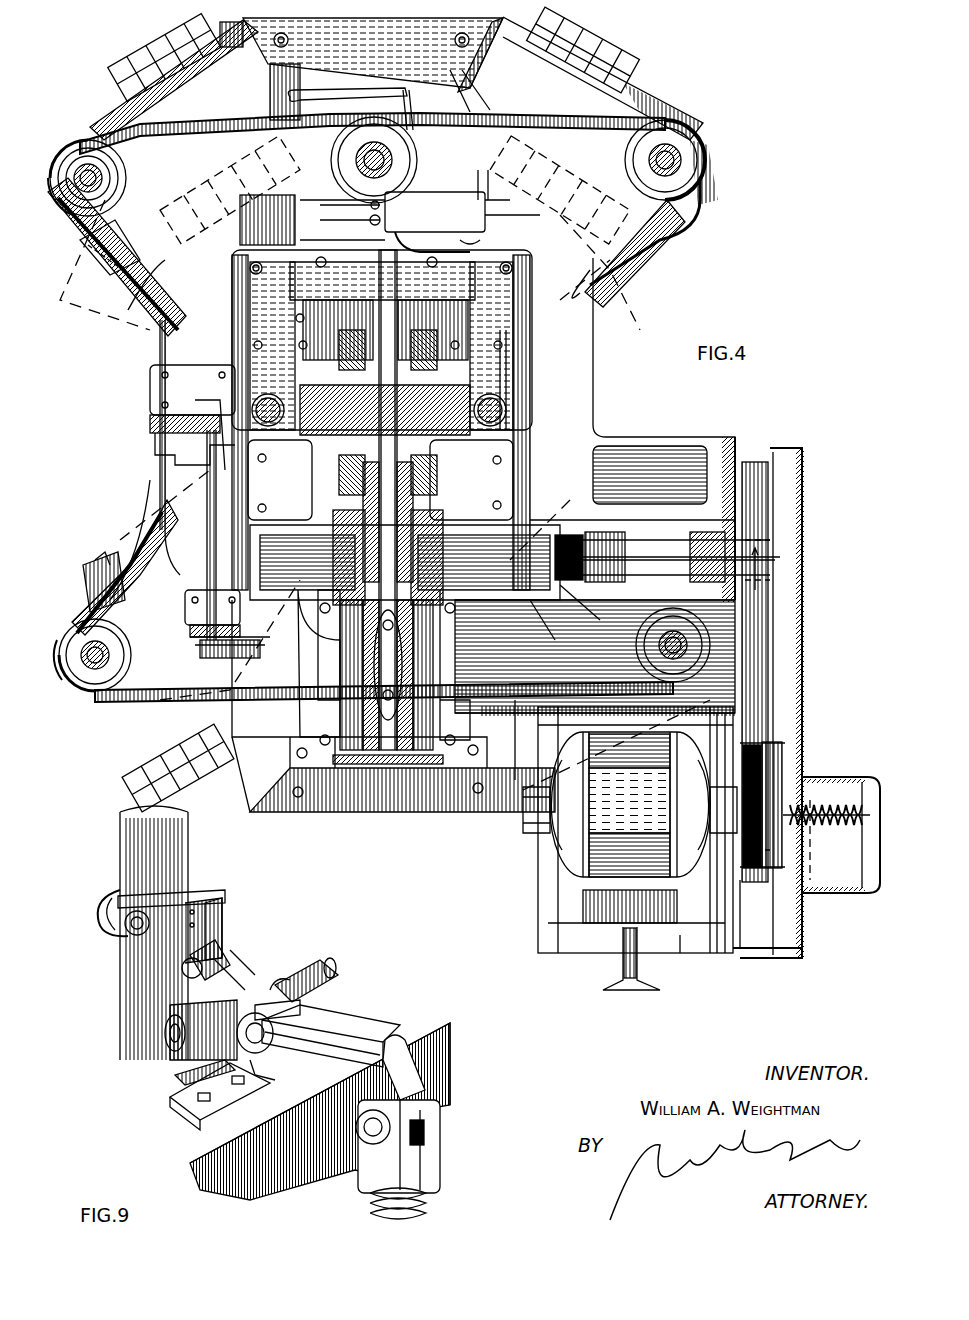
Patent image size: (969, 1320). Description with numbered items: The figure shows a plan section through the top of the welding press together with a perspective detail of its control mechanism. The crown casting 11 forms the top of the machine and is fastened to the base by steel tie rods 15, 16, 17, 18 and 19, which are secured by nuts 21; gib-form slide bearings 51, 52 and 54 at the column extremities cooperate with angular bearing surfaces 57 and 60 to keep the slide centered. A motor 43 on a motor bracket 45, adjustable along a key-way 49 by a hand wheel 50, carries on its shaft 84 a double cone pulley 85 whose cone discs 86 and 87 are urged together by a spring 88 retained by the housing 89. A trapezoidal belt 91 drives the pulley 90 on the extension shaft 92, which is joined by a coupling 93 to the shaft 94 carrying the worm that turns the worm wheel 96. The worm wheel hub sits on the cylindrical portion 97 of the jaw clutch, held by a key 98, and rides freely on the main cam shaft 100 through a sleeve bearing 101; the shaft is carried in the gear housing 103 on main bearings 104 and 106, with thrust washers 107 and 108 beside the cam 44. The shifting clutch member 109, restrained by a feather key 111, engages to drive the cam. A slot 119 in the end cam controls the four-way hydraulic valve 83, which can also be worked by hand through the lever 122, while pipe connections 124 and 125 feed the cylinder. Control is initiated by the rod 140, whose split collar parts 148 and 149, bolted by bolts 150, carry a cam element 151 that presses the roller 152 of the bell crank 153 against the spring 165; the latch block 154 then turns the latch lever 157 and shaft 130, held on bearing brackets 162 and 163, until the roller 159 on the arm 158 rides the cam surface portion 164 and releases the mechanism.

In FIG. 4, the crown casting 11 is at (208, 290).
In FIG. 4, the tie rod 15 is at (72, 170).
In FIG. 4, the tie rod 16 is at (680, 150).
In FIG. 4, the tie rod 17 is at (682, 632).
In FIG. 4, the tie rod 18 is at (70, 648).
In FIG. 4, the tie rod 19 is at (376, 150).
In FIG. 4, the nut 21 is at (90, 150).
In FIG. 4, the motor 43 is at (636, 815).
In FIG. 4, the cam 44 is at (379, 410).
In FIG. 4, the motor bracket 45 is at (545, 928).
In FIG. 4, the key-way 49 is at (688, 940).
In FIG. 4, the hand wheel 50 is at (624, 972).
In FIG. 4, the slide bearing 51 is at (118, 270).
In FIG. 4, the slide bearing 52 is at (680, 235).
In FIG. 4, the slide bearing 54 is at (118, 556).
In FIG. 4, the bearing surface 57 is at (150, 300).
In FIG. 4, the bearing surface 60 is at (142, 540).
In FIG. 4, the four-way hydraulic valve 83 is at (424, 224).
In FIG. 4, the motor shaft 84 is at (830, 825).
In FIG. 4, the double cone pulley 85 is at (758, 870).
In FIG. 4, the cone disc 86 is at (742, 915).
In FIG. 4, the cone disc 87 is at (778, 870).
In FIG. 4, the spring 88 is at (830, 785).
In FIG. 4, the housing 89 is at (875, 785).
In FIG. 4, the pulley 90 is at (785, 575).
In FIG. 4, the belt 91 is at (760, 680).
In FIG. 4, the extension shaft 92 is at (775, 550).
In FIG. 4, the coupling 93 is at (580, 585).
In FIG. 4, the shaft 94 is at (580, 618).
In FIG. 4, the worm wheel 96 is at (420, 520).
In FIG. 4, the cylindrical portion 97 is at (500, 482).
In FIG. 4, the key 98 is at (549, 631).
In FIG. 4, the main cam shaft 100 is at (387, 740).
In FIG. 4, the sleeve bearing 101 is at (471, 480).
In FIG. 4, the gear housing 103 is at (280, 480).
In FIG. 4, the main bearing 104 is at (430, 350).
In FIG. 4, the main bearing 106 is at (415, 732).
In FIG. 4, the thrust washer 107 is at (382, 420).
In FIG. 4, the thrust washer 108 is at (330, 455).
In FIG. 4, the shifting clutch member 109 is at (480, 690).
In FIG. 4, the feather key 111 is at (355, 690).
In FIG. 4, the slot 119 is at (485, 240).
In FIG. 4, the lever 122 is at (300, 93).
In FIG. 4, the pipe connection 124 is at (478, 195).
In FIG. 4, the pipe connection 125 is at (325, 205).
In FIG. 4, the shaft 130 is at (205, 493).
In FIG. 9, the shaft 130 is at (322, 972).
In FIG. 4, the rod 140 is at (500, 420).
In FIG. 9, the rod 140 is at (185, 862).
In FIG. 9, the split collar part 148 is at (150, 932).
In FIG. 9, the split collar part 149 is at (112, 895).
In FIG. 9, the bolt 150 is at (125, 932).
In FIG. 9, the cam element 151 is at (210, 935).
In FIG. 9, the roller 152 is at (215, 950).
In FIG. 9, the bell crank 153 is at (245, 970).
In FIG. 9, the latch block 154 is at (355, 1030).
In FIG. 9, the latch lever 157 is at (282, 982).
In FIG. 9, the arm 158 is at (175, 1098).
In FIG. 9, the roller 159 is at (290, 1010).
In FIG. 4, the bearing bracket 162 is at (182, 392).
In FIG. 9, the bearing bracket 162 is at (165, 1035).
In FIG. 4, the bearing bracket 163 is at (200, 640).
In FIG. 9, the cam surface portion 164 is at (279, 1071).
In FIG. 9, the spring 165 is at (428, 1195).